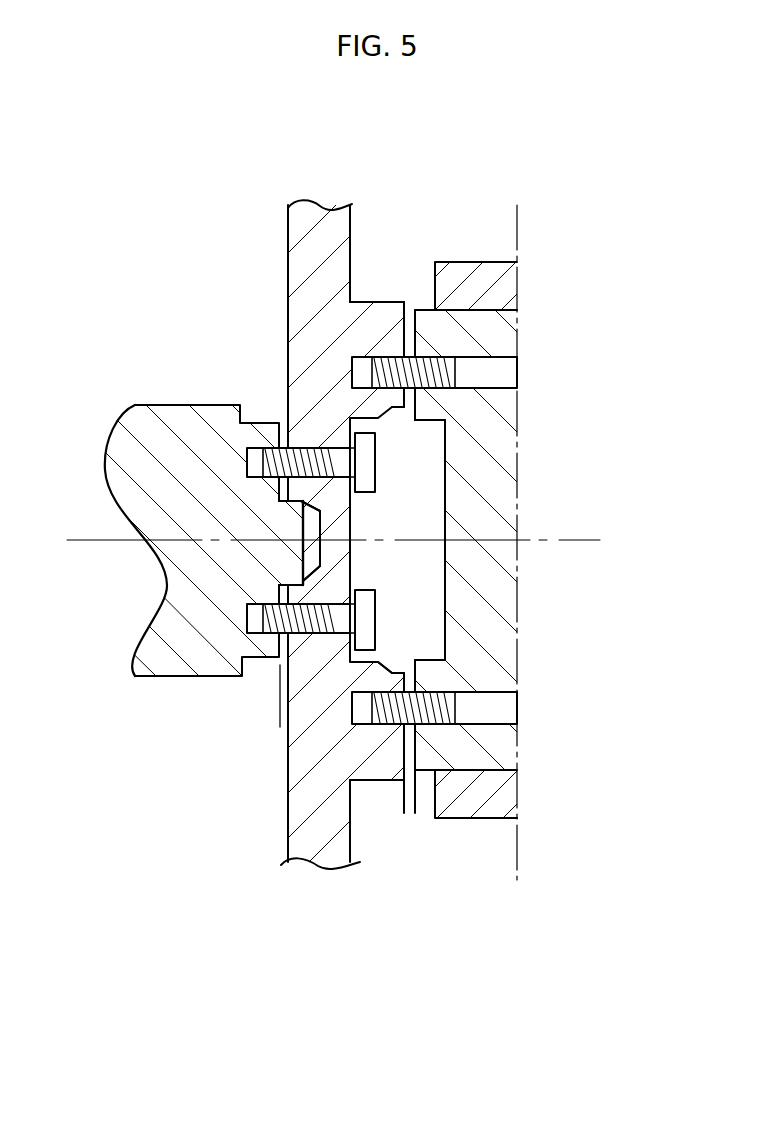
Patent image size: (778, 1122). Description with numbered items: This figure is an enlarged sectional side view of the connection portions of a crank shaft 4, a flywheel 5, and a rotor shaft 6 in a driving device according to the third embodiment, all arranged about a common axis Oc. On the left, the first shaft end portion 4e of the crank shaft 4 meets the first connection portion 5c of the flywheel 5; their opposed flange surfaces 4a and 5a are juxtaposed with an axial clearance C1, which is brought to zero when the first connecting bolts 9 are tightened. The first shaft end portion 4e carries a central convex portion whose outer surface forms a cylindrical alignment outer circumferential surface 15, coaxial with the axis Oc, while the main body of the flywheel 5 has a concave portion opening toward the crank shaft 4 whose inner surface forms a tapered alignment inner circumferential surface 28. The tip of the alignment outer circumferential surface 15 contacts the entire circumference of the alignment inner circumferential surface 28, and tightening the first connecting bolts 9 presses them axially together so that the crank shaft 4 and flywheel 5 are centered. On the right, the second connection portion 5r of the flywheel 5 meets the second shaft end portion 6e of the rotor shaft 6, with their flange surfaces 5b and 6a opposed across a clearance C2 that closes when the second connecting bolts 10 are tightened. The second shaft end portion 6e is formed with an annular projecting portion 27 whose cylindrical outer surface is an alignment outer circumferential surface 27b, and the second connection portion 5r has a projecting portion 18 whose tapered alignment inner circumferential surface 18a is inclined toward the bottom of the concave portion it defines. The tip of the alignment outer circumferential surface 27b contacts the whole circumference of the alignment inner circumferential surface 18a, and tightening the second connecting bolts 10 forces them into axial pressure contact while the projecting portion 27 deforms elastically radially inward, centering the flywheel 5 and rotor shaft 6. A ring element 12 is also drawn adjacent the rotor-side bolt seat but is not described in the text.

The crank shaft 4 is at (108, 449).
The flywheel 5 is at (306, 850).
The flange surface 5a is at (283, 649).
The flange surface 5b is at (420, 329).
The first connection portion 5c is at (296, 503).
The second connection portion 5r is at (362, 786).
The rotor shaft 6 is at (478, 752).
The flange surface 6a is at (407, 322).
The second shaft end portion 6e is at (408, 422).
The first connecting bolts 9 is at (378, 460).
The second connecting bolts 10 is at (483, 353).
The ring member 12 is at (489, 262).
The alignment outer circumferential surface 15 is at (298, 500).
The projecting portion 18 is at (362, 309).
The alignment inner circumferential surface 18a is at (410, 410).
The projecting portion 27 is at (403, 662).
The alignment outer circumferential surface 27b is at (450, 730).
The alignment inner circumferential surface 28 is at (296, 578).
The flange surface 4a is at (283, 506).
The first shaft end portion 4e is at (283, 524).
The clearance C1 is at (325, 712).
The clearance C2 is at (375, 793).
The common axis Oc is at (358, 542).